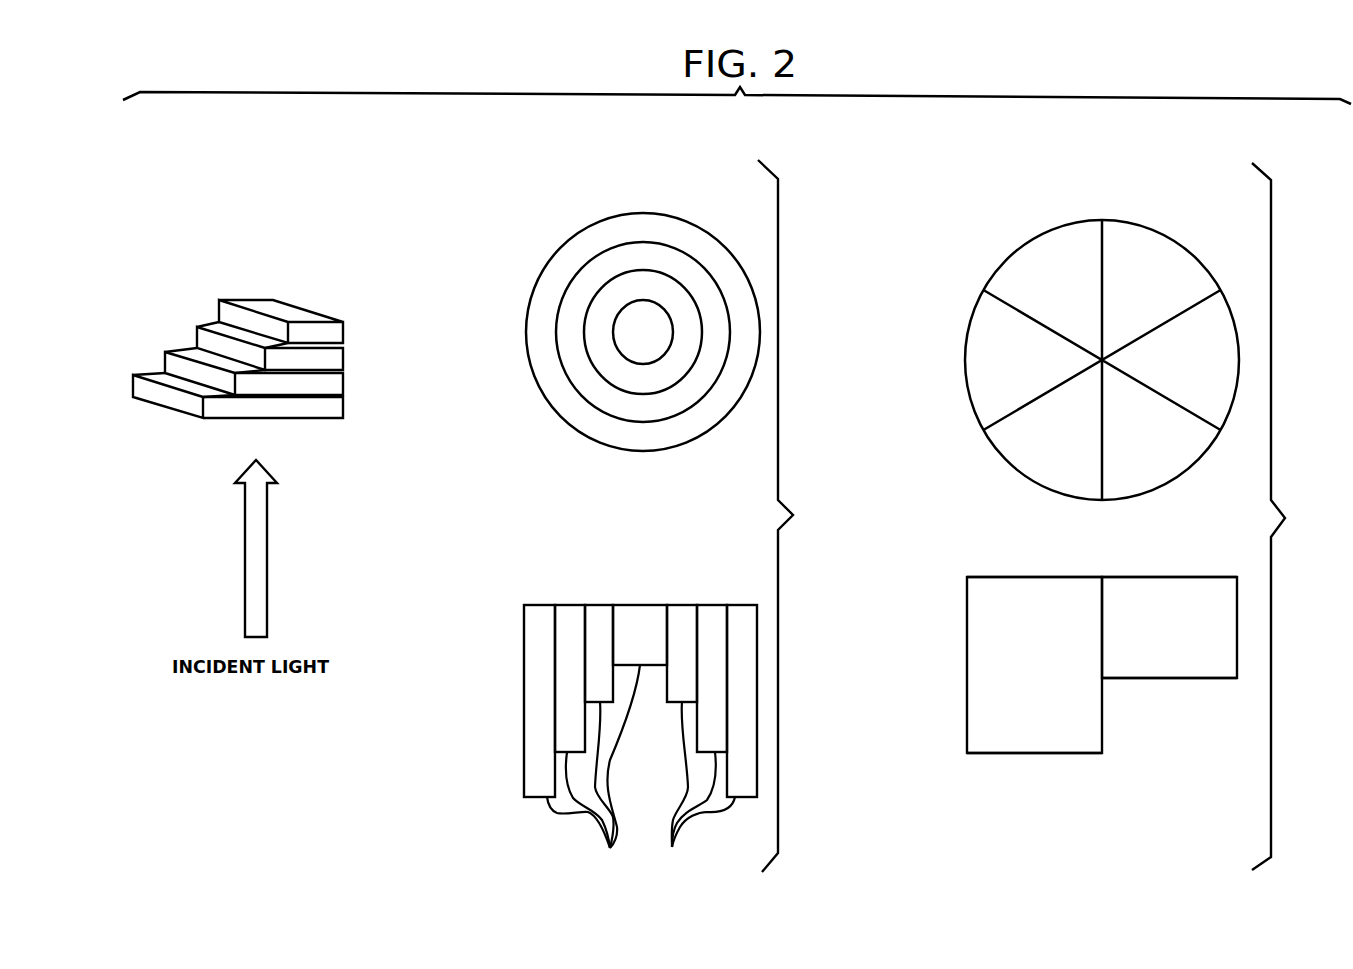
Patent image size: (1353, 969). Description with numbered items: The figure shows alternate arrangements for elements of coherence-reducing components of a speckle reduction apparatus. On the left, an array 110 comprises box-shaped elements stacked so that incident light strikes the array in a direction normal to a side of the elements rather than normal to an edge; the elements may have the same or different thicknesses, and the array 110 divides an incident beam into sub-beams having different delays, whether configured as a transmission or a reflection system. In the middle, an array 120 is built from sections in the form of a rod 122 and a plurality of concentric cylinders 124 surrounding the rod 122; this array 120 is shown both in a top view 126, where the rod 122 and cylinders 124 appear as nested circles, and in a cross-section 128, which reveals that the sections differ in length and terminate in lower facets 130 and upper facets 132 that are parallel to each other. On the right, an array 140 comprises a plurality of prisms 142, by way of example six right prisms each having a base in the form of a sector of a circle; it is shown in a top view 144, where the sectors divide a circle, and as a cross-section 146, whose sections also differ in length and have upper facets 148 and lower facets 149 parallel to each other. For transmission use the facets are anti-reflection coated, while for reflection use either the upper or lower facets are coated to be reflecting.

The array 110 is at (343, 356).
The array 120 is at (794, 516).
The rod 122 is at (643, 317).
The concentric cylinders 124 is at (562, 222).
The top view 126 is at (521, 267).
The cross-section 128 is at (508, 653).
The lower facets 130 is at (641, 771).
The upper facets 132 is at (595, 578).
The array 140 is at (1289, 516).
The prisms 142 is at (1198, 257).
The top view 144 is at (995, 257).
The cross-section 146 is at (1023, 772).
The upper facets 148 is at (1123, 680).
The lower facets 149 is at (1022, 577).